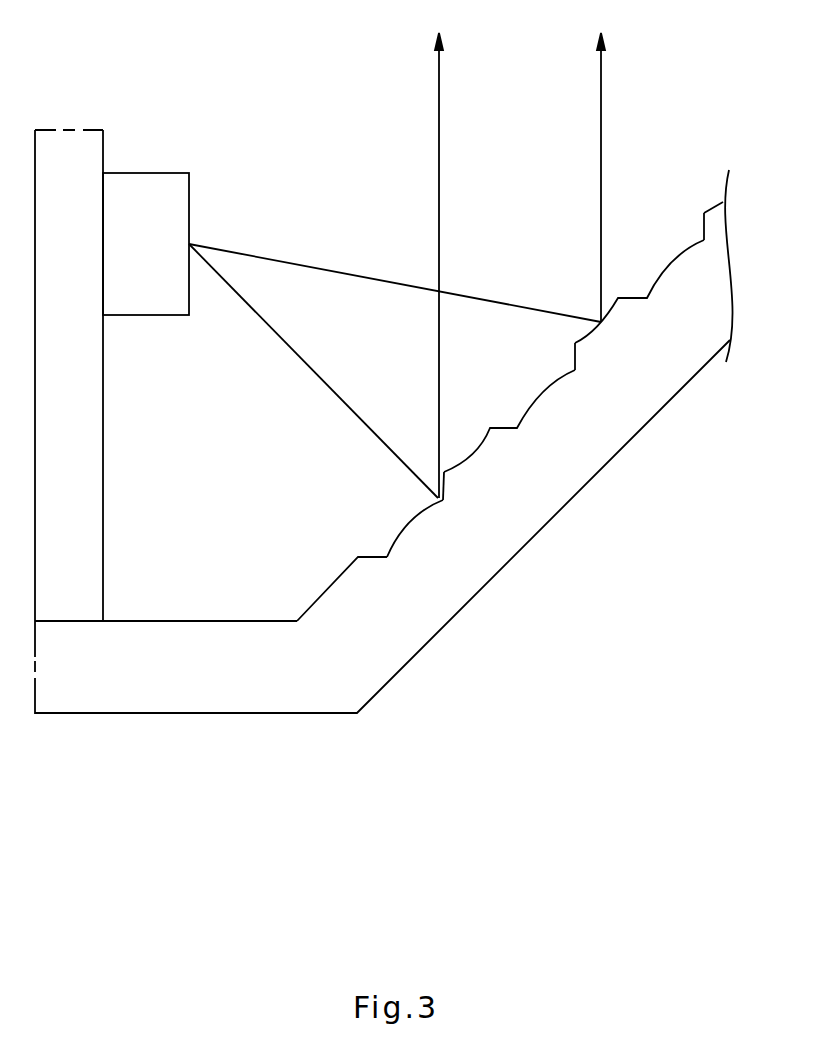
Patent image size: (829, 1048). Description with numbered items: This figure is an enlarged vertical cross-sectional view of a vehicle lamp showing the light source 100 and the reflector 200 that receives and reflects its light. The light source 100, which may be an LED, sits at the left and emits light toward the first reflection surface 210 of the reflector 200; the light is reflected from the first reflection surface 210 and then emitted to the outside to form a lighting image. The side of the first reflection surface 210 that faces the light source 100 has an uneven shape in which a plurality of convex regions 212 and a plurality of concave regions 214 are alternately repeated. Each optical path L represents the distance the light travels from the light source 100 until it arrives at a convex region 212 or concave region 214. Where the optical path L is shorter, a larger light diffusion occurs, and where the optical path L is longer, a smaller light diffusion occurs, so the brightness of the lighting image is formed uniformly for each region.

The light source 100 is at (145, 193).
The reflector 200 is at (413, 407).
The first reflection surface 210 is at (550, 490).
The convex region 212 is at (470, 450).
The concave region 214 is at (410, 527).
The optical path L is at (232, 283).